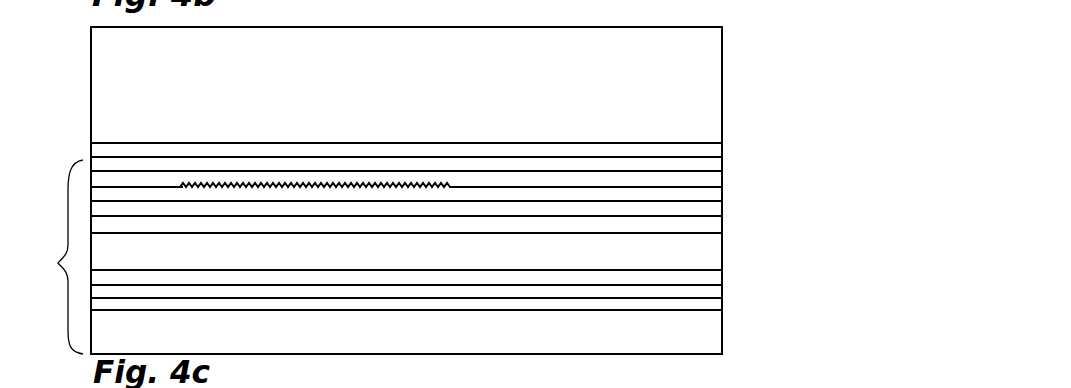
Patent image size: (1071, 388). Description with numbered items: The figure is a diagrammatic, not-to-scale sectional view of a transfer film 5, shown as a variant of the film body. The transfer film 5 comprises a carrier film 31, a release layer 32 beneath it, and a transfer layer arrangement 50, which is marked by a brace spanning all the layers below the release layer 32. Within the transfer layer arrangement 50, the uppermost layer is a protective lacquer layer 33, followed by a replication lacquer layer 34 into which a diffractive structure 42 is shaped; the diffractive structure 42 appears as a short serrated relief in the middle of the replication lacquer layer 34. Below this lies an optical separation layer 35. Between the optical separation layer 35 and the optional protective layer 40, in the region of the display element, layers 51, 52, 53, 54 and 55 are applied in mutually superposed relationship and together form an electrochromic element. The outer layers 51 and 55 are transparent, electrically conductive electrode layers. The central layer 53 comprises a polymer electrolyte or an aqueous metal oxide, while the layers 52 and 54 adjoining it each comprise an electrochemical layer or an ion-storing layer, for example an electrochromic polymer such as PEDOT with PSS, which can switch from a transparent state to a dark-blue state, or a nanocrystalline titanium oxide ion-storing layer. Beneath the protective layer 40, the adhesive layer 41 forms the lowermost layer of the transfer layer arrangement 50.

The transfer film 5 is at (738, 41).
The carrier film 31 is at (700, 72).
The release layer 32 is at (723, 152).
The protective lacquer layer 33 is at (723, 162).
The replication lacquer layer 34 is at (720, 177).
The optical separation layer 35 is at (720, 190).
The diffractive structure 42 is at (303, 182).
The electrode layer 51 is at (723, 203).
The electrochemical or ion-storing layer 52 is at (722, 223).
The central layer 53 is at (718, 252).
The electrochemical or ion-storing layer 54 is at (718, 275).
The electrode layer 55 is at (718, 290).
The protective layer 40 is at (718, 298).
The adhesive layer 41 is at (716, 330).
The transfer layer arrangement 50 is at (53, 257).